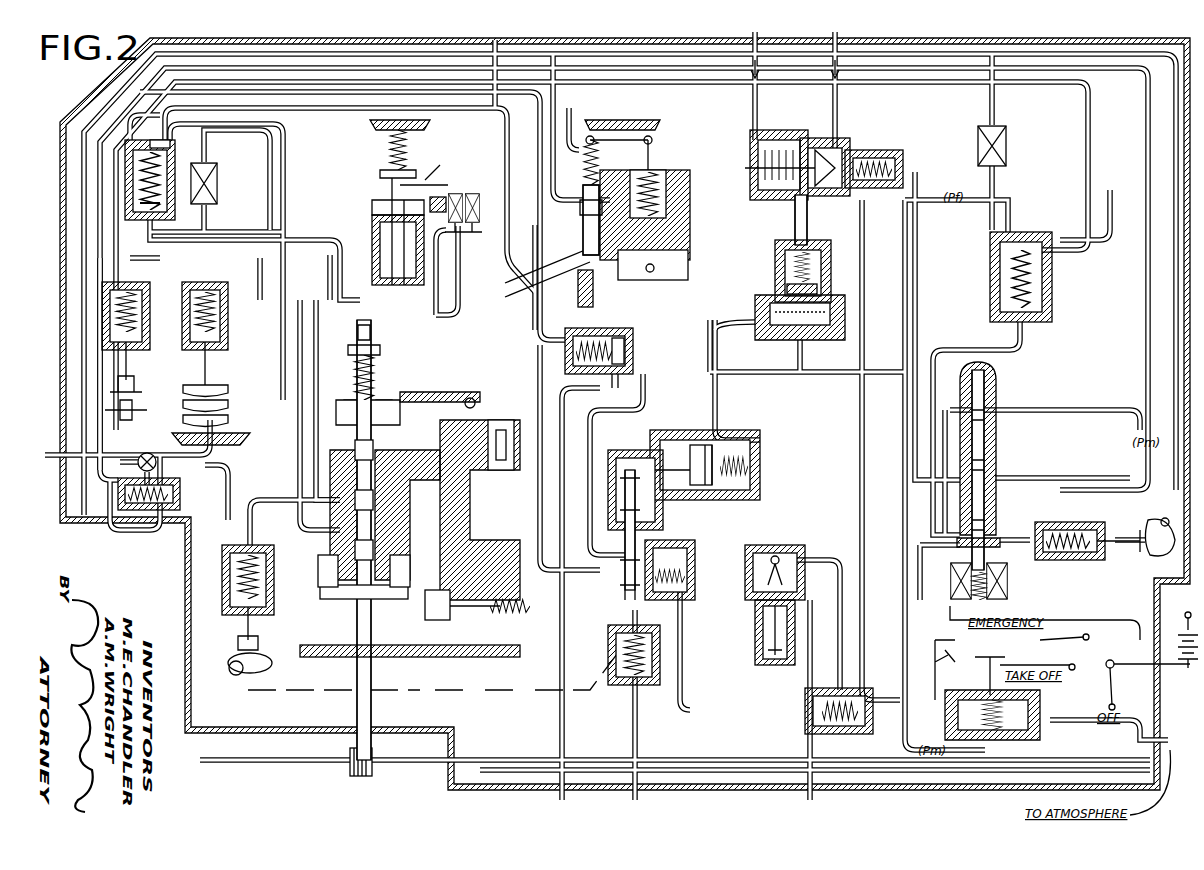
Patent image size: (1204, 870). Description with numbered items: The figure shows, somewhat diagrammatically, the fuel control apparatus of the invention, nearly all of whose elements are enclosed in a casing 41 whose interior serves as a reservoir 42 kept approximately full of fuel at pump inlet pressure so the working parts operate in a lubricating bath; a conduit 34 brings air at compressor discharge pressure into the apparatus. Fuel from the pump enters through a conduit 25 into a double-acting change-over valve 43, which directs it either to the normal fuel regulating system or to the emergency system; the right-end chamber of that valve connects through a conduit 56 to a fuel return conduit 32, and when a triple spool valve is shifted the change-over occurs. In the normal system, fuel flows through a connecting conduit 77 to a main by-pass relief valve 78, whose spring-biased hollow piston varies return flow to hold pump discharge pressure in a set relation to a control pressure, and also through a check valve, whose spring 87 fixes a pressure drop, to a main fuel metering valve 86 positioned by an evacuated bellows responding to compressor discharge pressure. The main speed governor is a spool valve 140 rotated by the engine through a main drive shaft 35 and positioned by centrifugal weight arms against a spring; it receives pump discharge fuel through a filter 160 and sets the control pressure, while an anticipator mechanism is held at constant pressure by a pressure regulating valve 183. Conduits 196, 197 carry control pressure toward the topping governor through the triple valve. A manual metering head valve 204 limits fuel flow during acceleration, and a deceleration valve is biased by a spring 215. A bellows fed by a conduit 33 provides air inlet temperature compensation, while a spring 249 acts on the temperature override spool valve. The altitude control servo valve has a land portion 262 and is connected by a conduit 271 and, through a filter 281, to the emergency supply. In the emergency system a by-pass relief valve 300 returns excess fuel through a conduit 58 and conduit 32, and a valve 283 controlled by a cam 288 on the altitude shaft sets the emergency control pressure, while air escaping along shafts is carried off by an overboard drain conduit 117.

The conduit 25 is at (848, 97).
The fuel return conduit 32 is at (782, 80).
The conduit 33 is at (104, 425).
The conduit 34 is at (640, 805).
The main drive shaft 35 is at (350, 760).
The casing 41 is at (104, 78).
The reservoir 42 is at (539, 389).
The change-over valve 43 is at (850, 150).
The conduit 56 is at (895, 476).
The conduit 58 is at (1080, 160).
The connecting conduit 77 is at (275, 112).
The main by-pass relief valve 78 is at (125, 186).
The main fuel metering valve 86 is at (740, 428).
The spring 87 is at (790, 270).
The overboard drain conduit 117 is at (545, 805).
The spool valve 140 is at (430, 502).
The filter 160 is at (212, 180).
The pressure regulating valve 183 is at (565, 362).
The conduit 196 is at (978, 457).
The conduit 197 is at (100, 106).
The manual metering head valve 204 is at (104, 290).
The spring 215 is at (222, 580).
The spring 249 is at (384, 148).
The land portion 262 is at (614, 200).
The conduit 271 is at (548, 52).
The filter 281 is at (1005, 140).
The valve 283 is at (1079, 530).
The cam 288 is at (1160, 545).
The by-pass relief valve 300 is at (1052, 292).